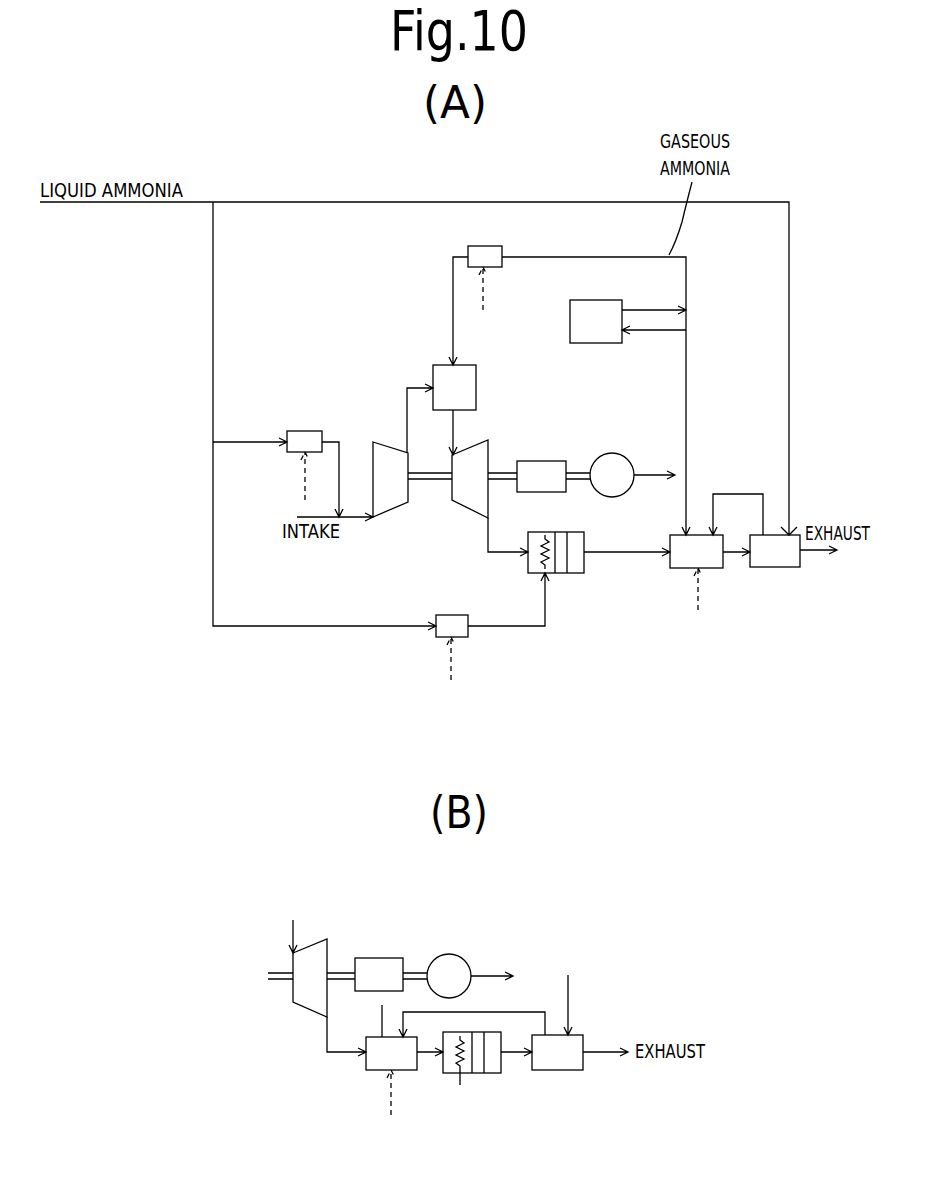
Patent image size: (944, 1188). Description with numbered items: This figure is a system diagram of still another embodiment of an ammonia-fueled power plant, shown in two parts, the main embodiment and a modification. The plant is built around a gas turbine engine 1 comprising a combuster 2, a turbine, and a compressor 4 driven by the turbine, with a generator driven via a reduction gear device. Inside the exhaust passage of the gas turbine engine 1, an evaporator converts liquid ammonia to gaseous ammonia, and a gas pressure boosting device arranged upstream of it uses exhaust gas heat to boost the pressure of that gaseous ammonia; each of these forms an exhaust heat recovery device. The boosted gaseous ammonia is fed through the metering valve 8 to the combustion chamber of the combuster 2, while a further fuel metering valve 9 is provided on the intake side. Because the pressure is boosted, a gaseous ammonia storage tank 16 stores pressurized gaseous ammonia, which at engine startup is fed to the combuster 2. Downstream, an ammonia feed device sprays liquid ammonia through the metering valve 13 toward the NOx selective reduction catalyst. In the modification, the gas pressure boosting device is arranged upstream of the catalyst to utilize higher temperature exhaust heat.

The gas turbine engine 1 is at (497, 427).
The combuster 2 is at (465, 378).
The compressor 4 is at (392, 502).
The fuel metering valve 8 is at (480, 250).
The fuel metering valve 9 is at (300, 432).
The metering valve 13 is at (452, 621).
The gaseous ammonia storage tank 16 is at (596, 336).